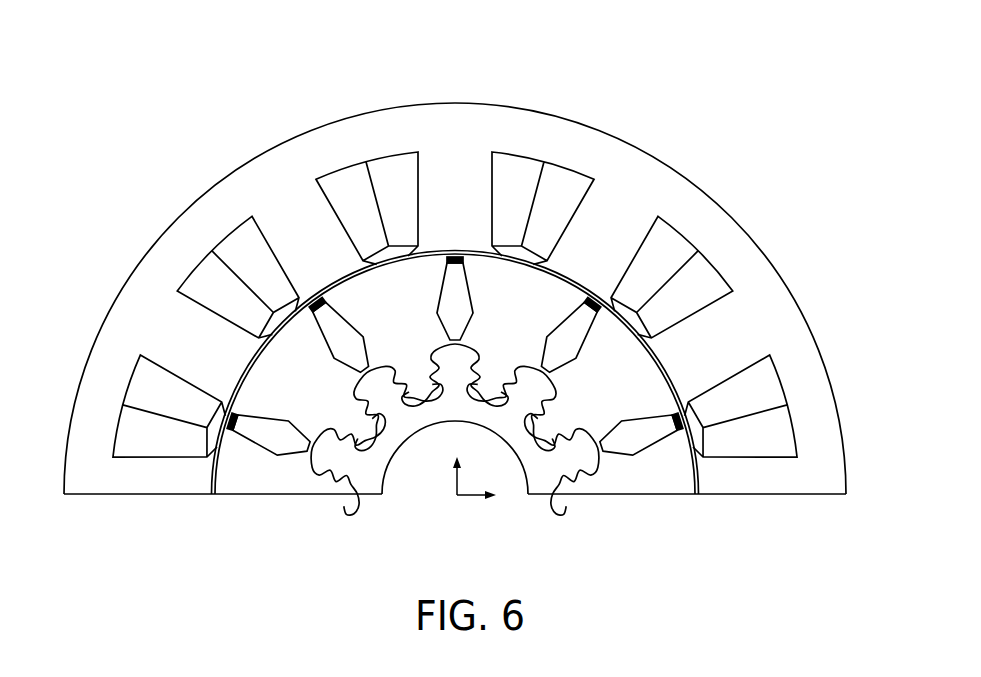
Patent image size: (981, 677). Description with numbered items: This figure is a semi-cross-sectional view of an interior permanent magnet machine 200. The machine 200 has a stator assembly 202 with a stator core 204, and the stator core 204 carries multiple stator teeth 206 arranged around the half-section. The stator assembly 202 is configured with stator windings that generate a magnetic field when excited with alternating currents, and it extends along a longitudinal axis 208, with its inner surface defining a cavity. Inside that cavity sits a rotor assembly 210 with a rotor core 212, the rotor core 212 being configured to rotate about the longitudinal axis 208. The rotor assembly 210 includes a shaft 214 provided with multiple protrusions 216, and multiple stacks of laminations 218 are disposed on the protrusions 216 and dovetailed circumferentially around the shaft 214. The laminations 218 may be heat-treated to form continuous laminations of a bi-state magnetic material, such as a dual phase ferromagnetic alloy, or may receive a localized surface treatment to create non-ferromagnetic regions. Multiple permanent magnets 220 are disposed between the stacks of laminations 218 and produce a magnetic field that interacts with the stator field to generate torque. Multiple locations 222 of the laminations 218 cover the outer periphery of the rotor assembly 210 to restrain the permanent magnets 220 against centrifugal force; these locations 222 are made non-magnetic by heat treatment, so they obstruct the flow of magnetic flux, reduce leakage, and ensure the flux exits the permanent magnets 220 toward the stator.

The IPM machine 200 is at (742, 50).
The stator assembly 202 is at (565, 185).
The stator core 204 is at (783, 506).
The stator teeth 206 is at (448, 197).
The longitudinal axis 208 is at (457, 497).
The rotor assembly 210 is at (298, 452).
The rotor core 212 is at (623, 506).
The shaft 214 is at (372, 490).
The protrusions 216 is at (582, 447).
The laminations 218 is at (280, 377).
The permanent magnets 220 is at (550, 352).
The locations 222 is at (672, 402).